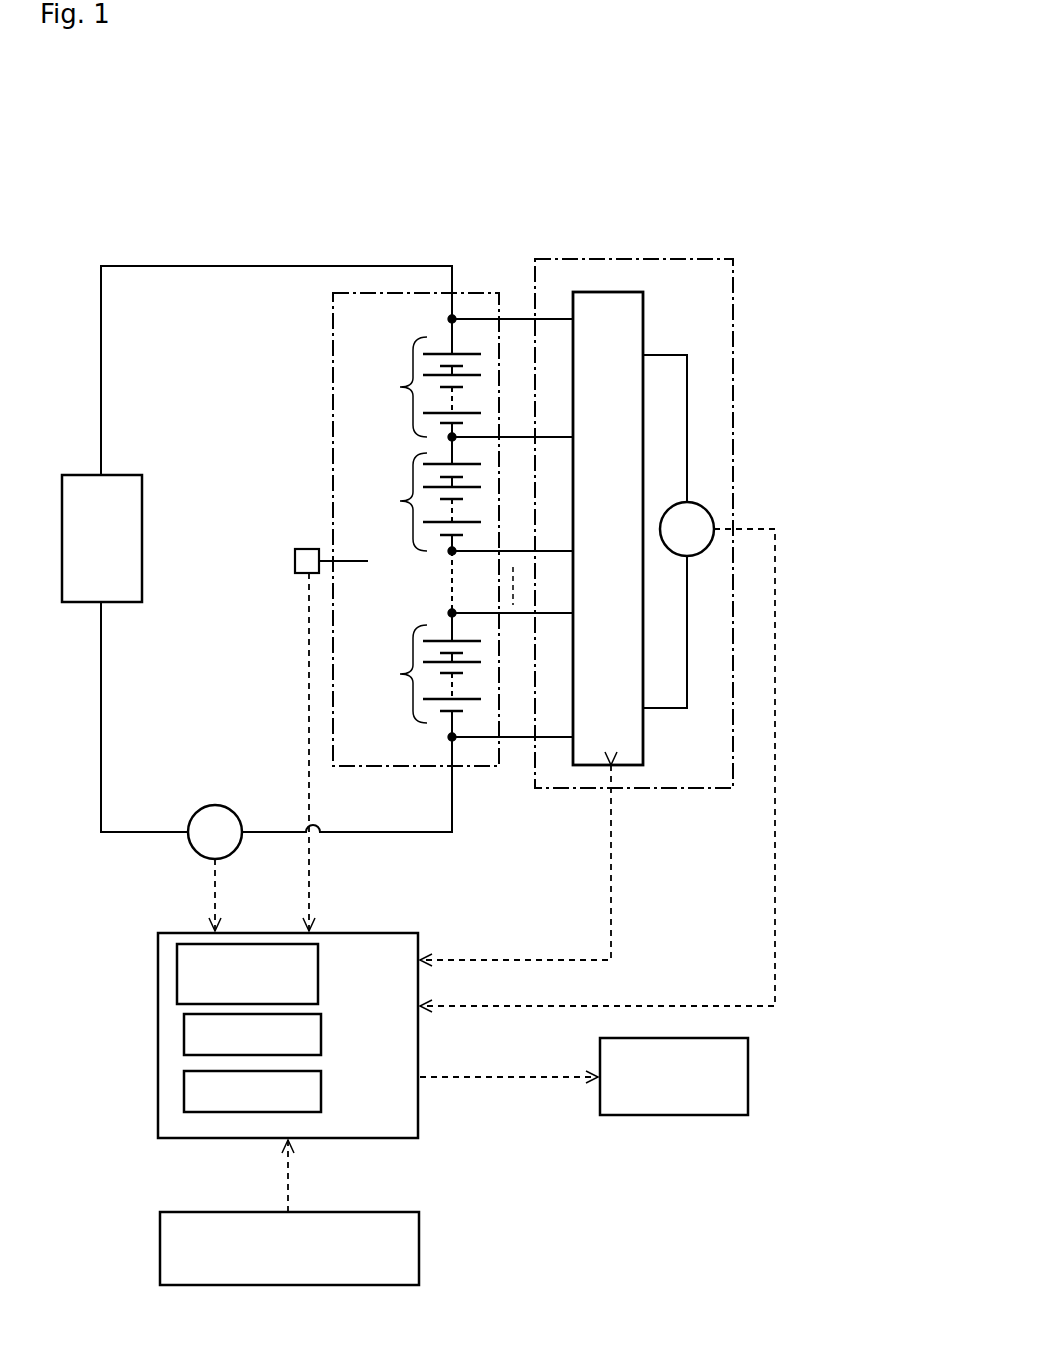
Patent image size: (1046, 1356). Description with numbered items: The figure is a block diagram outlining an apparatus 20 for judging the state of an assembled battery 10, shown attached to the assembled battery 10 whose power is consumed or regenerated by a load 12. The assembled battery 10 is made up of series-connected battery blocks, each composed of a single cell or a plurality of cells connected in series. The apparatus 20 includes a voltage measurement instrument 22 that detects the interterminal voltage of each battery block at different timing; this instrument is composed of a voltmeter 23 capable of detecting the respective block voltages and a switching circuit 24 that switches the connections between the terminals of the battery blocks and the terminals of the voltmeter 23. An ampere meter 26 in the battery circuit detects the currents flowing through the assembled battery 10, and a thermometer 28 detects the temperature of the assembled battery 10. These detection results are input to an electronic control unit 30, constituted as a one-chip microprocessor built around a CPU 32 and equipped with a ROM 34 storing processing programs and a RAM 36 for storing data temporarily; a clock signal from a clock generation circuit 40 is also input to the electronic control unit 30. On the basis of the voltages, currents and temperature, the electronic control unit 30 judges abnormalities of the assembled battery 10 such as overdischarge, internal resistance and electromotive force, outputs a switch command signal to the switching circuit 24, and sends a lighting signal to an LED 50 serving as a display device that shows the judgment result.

The apparatus for judging a state 20 is at (124, 225).
The assembled battery 10 is at (475, 293).
The load 12 is at (126, 475).
The voltage measurement instrument 22 is at (632, 259).
The voltmeter 23 is at (710, 510).
The switching circuit 24 is at (588, 768).
The ampere meter 26 is at (215, 805).
The thermometer 28 is at (294, 561).
The electronic control unit 30 is at (360, 1140).
The CPU 32 is at (320, 976).
The ROM 34 is at (322, 1035).
The RAM 36 is at (322, 1092).
The clock generation circuit 40 is at (420, 1245).
The LED 50 is at (750, 1076).